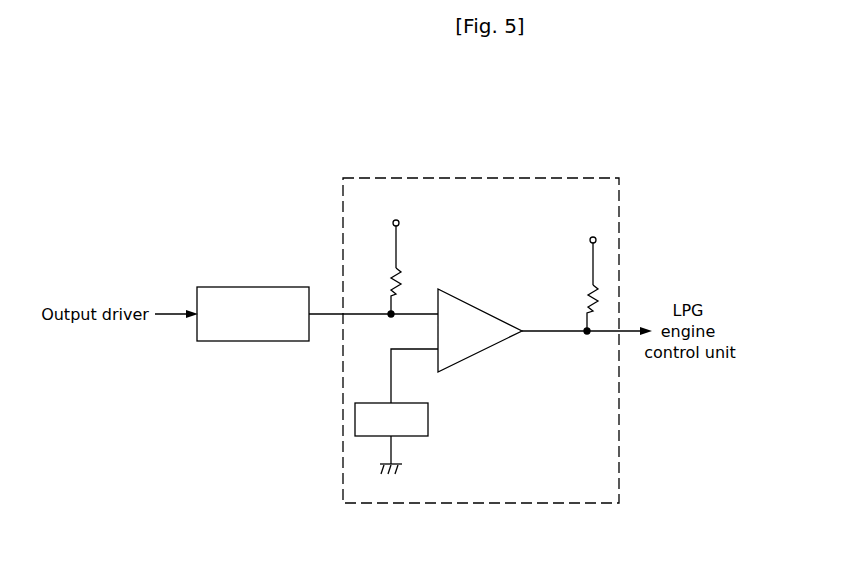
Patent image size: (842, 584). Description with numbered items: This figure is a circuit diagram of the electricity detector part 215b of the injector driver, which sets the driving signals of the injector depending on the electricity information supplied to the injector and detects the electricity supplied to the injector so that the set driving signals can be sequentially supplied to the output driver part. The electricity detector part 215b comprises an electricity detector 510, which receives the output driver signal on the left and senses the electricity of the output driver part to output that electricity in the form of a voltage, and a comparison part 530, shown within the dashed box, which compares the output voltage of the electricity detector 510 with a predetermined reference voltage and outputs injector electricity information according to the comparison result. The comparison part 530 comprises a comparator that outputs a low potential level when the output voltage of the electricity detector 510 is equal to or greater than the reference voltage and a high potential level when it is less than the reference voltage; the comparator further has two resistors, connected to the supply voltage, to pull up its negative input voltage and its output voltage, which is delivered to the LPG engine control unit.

The electricity detector part 215b is at (548, 128).
The electricity detector 510 is at (250, 341).
The comparison part 530 is at (480, 503).